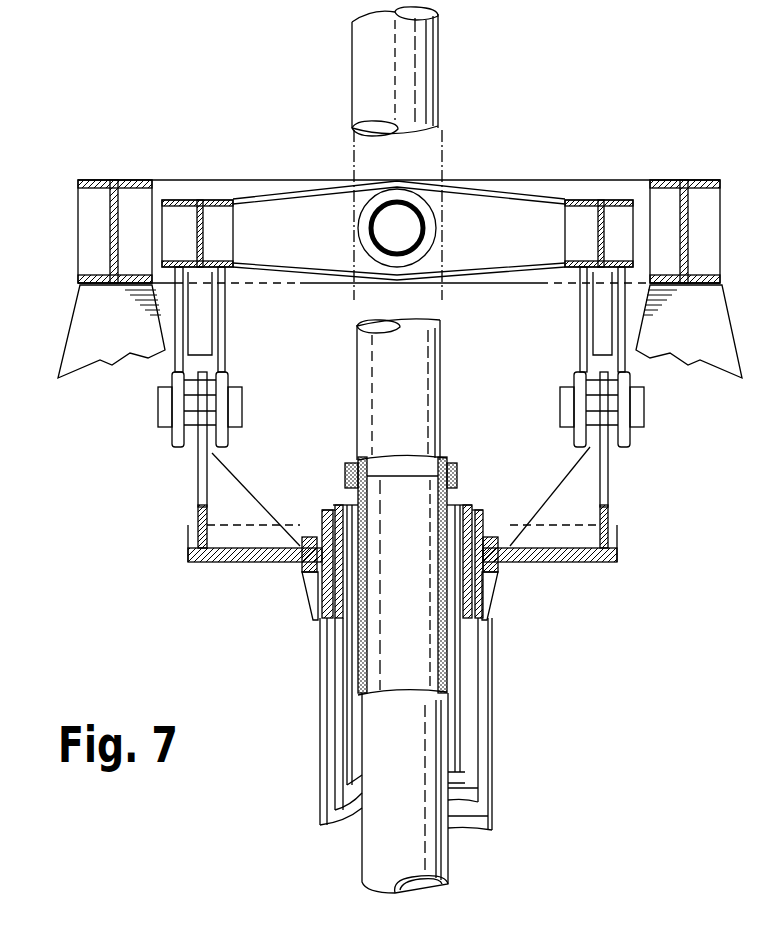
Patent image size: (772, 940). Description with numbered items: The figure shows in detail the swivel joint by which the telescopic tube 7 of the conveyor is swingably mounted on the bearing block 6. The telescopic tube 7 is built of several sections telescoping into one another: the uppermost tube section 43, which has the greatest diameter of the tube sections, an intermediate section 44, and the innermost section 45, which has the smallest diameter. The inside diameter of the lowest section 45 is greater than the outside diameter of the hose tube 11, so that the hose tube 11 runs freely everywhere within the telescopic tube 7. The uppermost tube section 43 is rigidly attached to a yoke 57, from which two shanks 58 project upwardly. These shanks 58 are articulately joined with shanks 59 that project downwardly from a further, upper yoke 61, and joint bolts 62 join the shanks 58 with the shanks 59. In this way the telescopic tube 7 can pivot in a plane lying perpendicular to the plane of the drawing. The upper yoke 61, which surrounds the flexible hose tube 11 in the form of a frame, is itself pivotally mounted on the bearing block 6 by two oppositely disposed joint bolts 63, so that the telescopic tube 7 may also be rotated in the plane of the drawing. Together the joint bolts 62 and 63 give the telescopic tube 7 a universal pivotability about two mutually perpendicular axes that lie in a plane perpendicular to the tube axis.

The bearing block 6 is at (88, 325).
The telescopic tube 7 is at (477, 667).
The hose tube 11 is at (435, 856).
The uppermost tube section 43 is at (490, 646).
The intermediate section 44 is at (488, 697).
The innermost section 45 is at (505, 728).
The yoke 57 is at (250, 563).
The shanks 58 is at (198, 465).
The shanks 59 is at (222, 328).
The upper yoke 61 is at (505, 207).
The joint bolts 62 is at (236, 402).
The joint bolts 63 is at (385, 223).